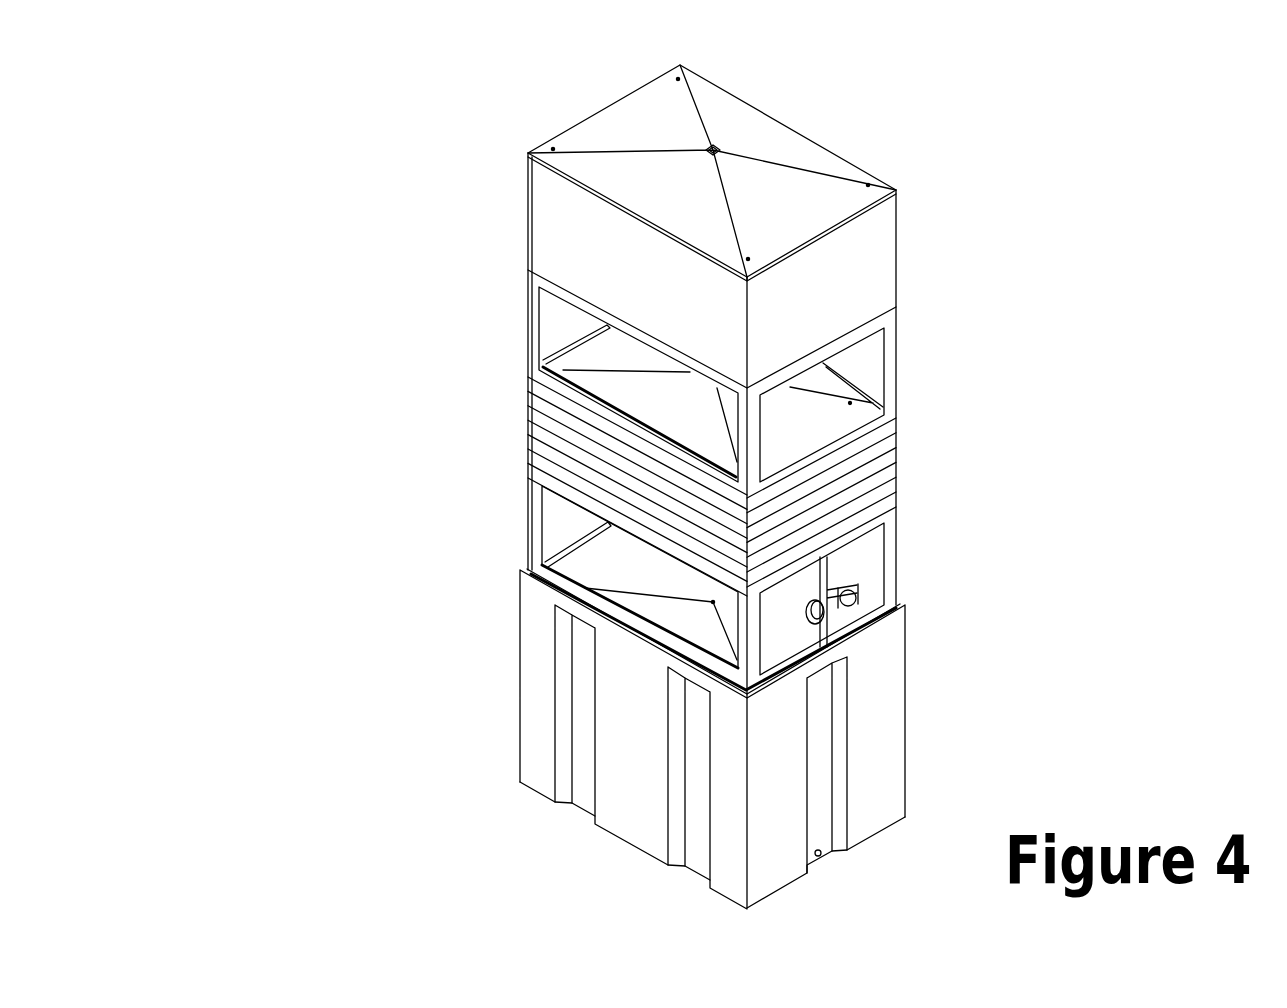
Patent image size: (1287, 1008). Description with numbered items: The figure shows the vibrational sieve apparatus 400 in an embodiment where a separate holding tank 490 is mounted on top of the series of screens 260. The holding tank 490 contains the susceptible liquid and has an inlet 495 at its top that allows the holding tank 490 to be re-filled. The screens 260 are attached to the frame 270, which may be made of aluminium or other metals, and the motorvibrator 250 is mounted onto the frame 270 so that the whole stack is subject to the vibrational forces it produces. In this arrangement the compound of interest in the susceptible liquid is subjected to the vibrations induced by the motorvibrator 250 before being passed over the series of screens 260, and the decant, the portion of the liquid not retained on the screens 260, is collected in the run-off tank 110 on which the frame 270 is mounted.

The vibrational sieve apparatus 400 is at (647, 462).
The holding tank 490 is at (830, 144).
The inlet 495 is at (700, 142).
The screens 260 is at (907, 453).
The frame 270 is at (532, 544).
The motorvibrator 250 is at (855, 591).
The run-off tank 110 is at (899, 755).